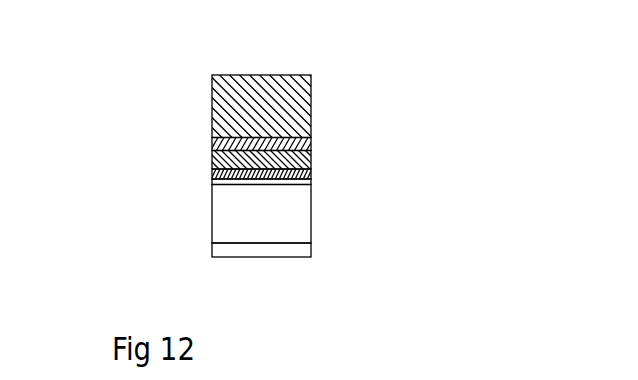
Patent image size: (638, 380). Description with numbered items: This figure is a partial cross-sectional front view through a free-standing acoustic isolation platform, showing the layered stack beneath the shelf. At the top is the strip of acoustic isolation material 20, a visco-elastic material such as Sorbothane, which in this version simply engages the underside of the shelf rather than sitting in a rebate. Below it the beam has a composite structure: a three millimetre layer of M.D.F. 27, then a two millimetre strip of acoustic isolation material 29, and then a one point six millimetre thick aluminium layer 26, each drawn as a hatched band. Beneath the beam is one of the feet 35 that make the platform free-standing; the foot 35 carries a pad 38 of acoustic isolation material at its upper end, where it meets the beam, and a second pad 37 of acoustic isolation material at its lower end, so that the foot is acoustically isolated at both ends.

The strip acoustic isolation material 20 is at (240, 96).
The layer of M.D.F. 27 is at (280, 143).
The strip of acoustic isolation material 29 is at (235, 163).
The aluminium layer 26 is at (270, 172).
The pad of acoustic isolation material 38 is at (241, 183).
The foot 35 is at (292, 227).
The pad of acoustic isolation material 37 is at (235, 250).